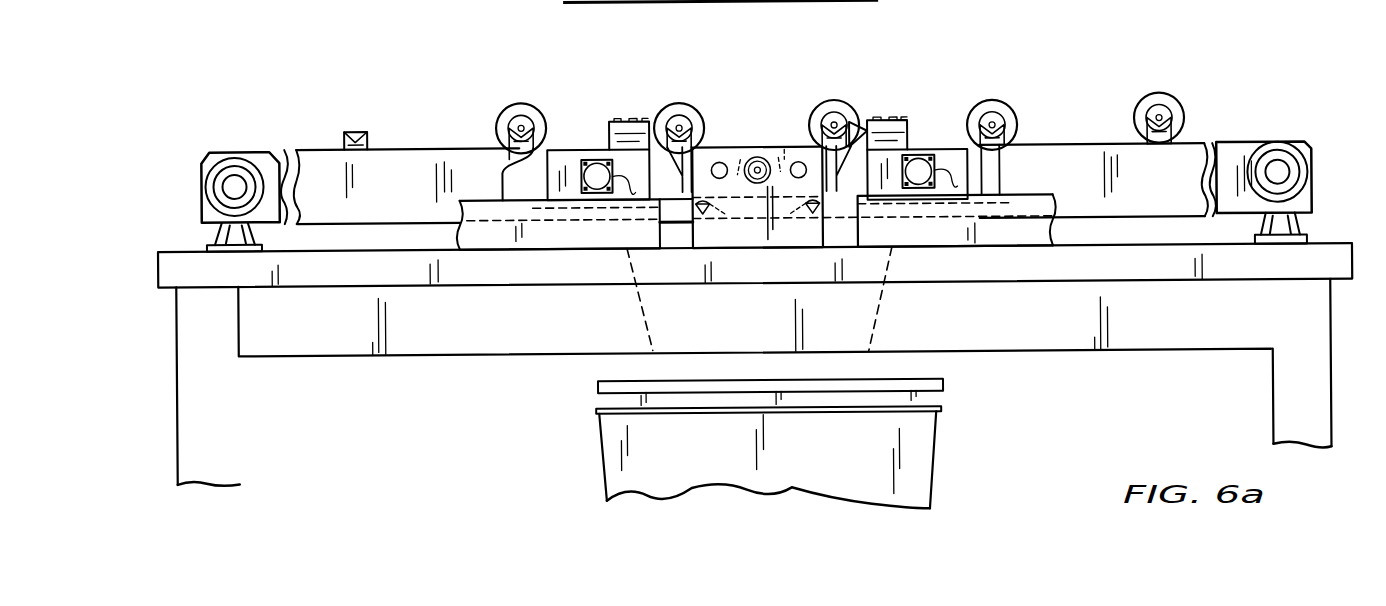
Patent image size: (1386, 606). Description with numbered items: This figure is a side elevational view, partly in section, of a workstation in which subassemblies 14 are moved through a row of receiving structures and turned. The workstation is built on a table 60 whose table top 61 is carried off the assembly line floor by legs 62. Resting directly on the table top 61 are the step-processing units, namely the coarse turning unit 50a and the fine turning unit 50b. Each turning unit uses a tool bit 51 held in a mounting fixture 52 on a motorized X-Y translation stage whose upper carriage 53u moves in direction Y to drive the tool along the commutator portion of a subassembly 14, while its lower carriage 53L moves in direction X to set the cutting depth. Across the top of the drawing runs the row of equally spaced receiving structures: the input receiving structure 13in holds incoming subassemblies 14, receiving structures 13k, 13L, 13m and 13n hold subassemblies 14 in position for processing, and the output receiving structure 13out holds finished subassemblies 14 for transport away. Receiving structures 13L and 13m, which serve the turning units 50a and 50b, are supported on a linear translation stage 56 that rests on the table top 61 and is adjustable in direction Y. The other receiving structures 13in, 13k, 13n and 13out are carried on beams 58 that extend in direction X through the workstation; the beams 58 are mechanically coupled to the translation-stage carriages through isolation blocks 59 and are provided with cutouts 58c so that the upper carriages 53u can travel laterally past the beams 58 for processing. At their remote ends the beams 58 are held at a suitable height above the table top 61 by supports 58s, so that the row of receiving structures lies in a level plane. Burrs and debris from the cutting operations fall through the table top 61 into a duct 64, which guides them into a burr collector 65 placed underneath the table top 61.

The output receiving structure 13out is at (357, 129).
The receiving structure 13n is at (509, 130).
The receiving structure 13m is at (693, 134).
The receiving structure 13L is at (813, 137).
The receiving structure 13k is at (1013, 126).
The input receiving structure 13in is at (1183, 125).
The subassembly 14 is at (522, 103).
The coarse turning unit 50a is at (1027, 250).
The fine turning unit 50b is at (575, 254).
The tool bit 51 is at (860, 125).
The mounting fixture 52 is at (650, 128).
The upper carriage 53u is at (558, 166).
The lower carriage 53L is at (493, 238).
The linear translation stage 56 is at (743, 235).
The beam 58 is at (318, 160).
The cutout 58c is at (532, 171).
The support 58s is at (217, 214).
The isolation block 59 is at (778, 147).
The table 60 is at (1331, 347).
The table top 61 is at (1287, 267).
The leg 62 is at (230, 405).
The duct 64 is at (633, 312).
The burr collector 65 is at (923, 455).